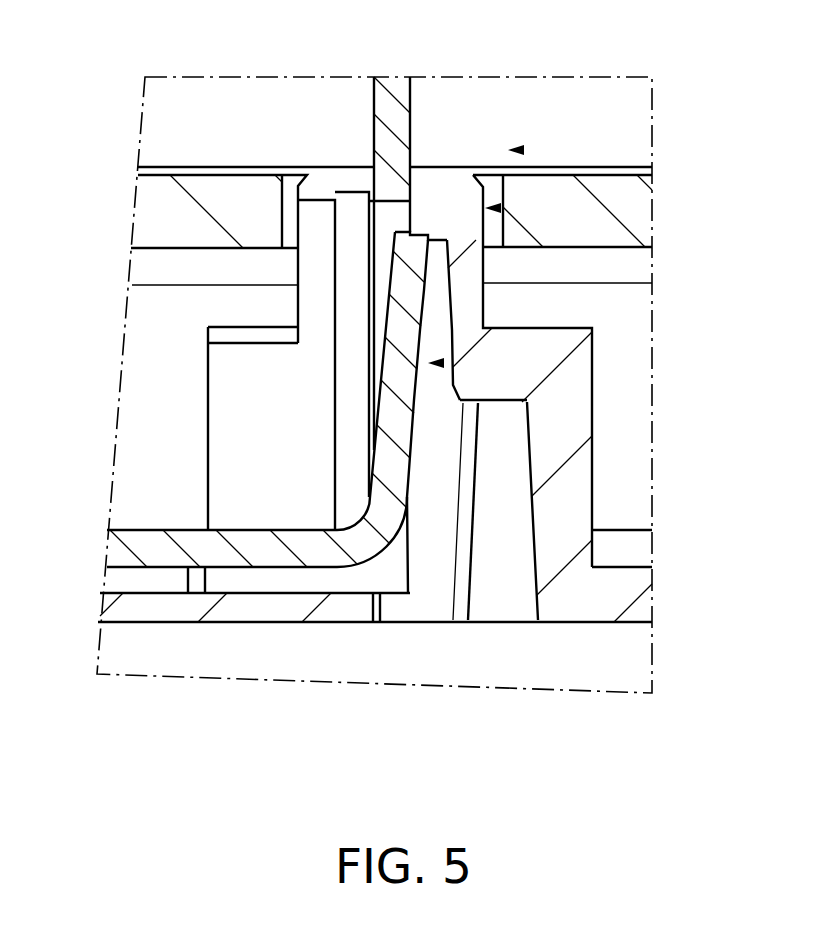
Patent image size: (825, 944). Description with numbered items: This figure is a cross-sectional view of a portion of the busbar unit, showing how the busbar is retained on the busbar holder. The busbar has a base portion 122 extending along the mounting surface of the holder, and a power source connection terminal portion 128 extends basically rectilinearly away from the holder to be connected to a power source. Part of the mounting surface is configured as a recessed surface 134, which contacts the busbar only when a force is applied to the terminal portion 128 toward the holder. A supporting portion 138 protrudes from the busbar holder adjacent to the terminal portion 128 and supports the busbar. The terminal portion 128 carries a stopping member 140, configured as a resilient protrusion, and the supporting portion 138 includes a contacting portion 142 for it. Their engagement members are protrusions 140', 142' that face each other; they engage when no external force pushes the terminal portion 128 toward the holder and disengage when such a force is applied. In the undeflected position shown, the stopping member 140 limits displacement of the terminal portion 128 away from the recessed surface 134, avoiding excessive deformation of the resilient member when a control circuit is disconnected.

The power source connection terminal portion 128 is at (390, 119).
The supporting portion 138 is at (512, 150).
The contacting portion 142 is at (603, 167).
The protrusion 142' is at (598, 277).
The protrusion 140' is at (567, 262).
The stopping member 140 is at (539, 412).
The base portion 122 is at (167, 557).
The recessed surface 134 is at (272, 597).